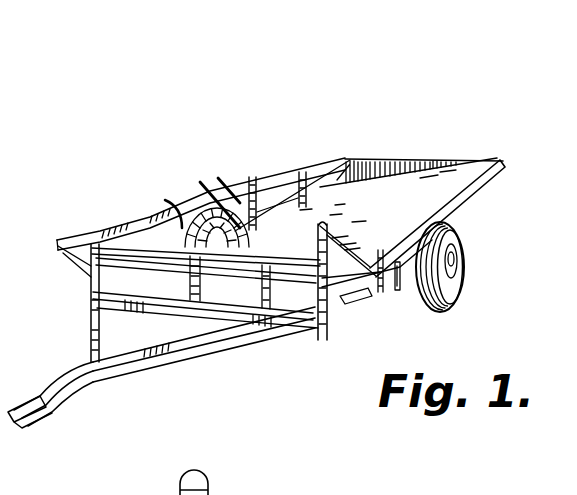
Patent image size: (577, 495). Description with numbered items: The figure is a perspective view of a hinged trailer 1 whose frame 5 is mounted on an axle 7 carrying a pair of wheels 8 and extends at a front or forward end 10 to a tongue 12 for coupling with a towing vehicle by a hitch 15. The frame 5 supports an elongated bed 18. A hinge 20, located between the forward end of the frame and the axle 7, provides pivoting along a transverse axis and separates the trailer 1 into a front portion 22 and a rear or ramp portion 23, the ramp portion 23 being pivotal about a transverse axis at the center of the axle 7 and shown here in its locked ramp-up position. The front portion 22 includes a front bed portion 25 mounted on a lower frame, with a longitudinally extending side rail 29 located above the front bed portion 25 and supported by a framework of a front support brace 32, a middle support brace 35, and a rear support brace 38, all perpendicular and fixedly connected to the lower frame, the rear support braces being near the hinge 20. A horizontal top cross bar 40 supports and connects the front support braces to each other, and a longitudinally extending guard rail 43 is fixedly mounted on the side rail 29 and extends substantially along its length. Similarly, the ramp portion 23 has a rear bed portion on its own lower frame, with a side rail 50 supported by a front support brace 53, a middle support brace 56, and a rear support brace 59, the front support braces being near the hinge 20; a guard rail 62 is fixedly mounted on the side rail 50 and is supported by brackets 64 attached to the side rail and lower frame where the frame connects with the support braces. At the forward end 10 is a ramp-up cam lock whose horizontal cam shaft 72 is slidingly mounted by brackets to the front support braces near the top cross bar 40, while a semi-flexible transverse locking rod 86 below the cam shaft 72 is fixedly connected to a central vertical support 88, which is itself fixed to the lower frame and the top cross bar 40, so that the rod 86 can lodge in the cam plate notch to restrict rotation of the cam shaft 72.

The hinged trailer 1 is at (198, 116).
The frame 5 is at (332, 328).
The axle 7 is at (398, 272).
The wheels 8 is at (466, 266).
The front or forward end 10 is at (156, 317).
The tongue 12 is at (209, 355).
The hitch 15 is at (44, 416).
The elongated bed 18 is at (402, 218).
The hinge 20 is at (299, 236).
The front portion 22 is at (133, 160).
The rear or ramp portion 23 is at (288, 127).
The front bed portion 25 is at (247, 241).
The side rail 29 is at (131, 234).
The front support brace 32 is at (91, 290).
The middle support brace 35 is at (165, 200).
The rear support brace 38 is at (206, 200).
The horizontal top cross bar 40 is at (276, 254).
The guard rail 43 is at (84, 237).
The side rail 50 is at (306, 172).
The front support brace 53 is at (251, 177).
The middle support brace 56 is at (299, 176).
The rear support brace 59 is at (365, 162).
The guard rail 62 is at (232, 180).
The brackets 64 is at (292, 204).
The horizontal cam shaft 72 is at (138, 267).
The transverse locking rod 86 is at (358, 290).
The central vertical support 88 is at (208, 288).